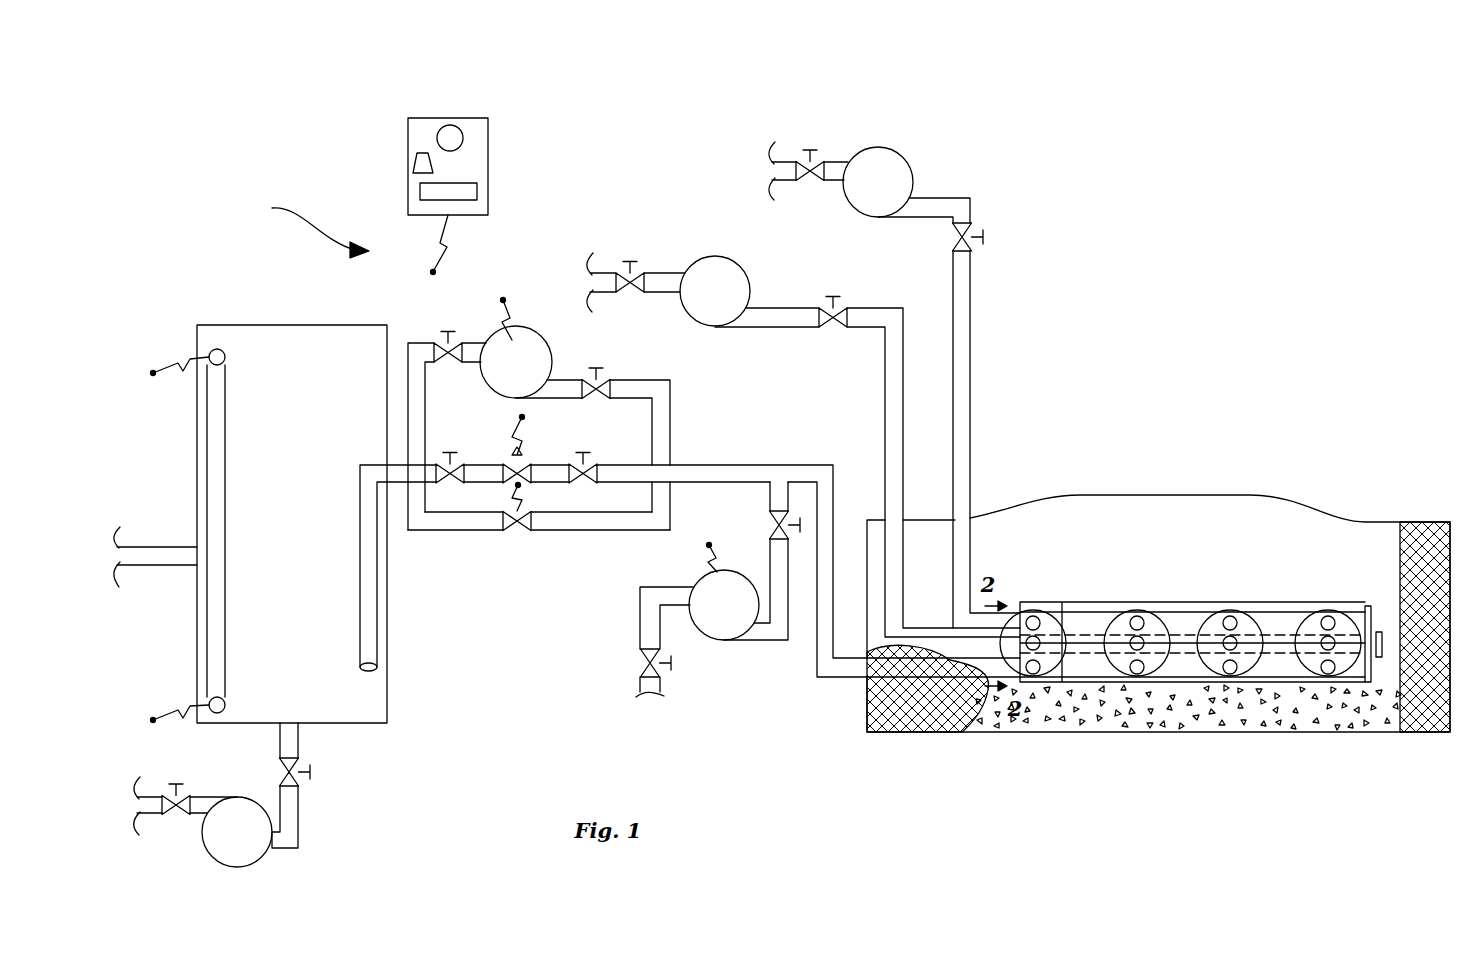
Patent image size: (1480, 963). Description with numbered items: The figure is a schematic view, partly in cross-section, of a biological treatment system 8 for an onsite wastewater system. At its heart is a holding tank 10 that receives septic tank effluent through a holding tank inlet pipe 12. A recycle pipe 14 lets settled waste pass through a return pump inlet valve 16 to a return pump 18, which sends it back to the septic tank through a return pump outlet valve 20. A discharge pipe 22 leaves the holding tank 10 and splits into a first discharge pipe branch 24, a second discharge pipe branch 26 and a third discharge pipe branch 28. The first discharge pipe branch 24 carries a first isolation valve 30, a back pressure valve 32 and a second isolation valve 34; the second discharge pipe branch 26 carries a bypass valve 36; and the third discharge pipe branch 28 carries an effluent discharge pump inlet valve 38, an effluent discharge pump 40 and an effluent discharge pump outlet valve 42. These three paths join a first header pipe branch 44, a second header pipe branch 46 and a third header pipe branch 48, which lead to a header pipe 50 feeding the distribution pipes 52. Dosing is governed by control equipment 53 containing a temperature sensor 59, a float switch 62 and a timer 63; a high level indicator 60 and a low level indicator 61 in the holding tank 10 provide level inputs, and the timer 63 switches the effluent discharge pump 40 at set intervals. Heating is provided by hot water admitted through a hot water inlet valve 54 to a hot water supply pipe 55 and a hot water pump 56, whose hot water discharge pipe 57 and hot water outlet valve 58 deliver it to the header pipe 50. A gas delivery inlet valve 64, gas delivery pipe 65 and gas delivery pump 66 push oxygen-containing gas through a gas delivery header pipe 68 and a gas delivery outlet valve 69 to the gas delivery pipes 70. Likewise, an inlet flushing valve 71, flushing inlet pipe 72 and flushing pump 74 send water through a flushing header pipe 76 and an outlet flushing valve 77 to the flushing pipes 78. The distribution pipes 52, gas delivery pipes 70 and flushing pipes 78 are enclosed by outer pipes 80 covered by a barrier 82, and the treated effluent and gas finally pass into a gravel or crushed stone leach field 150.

The biological treatment system 8 is at (307, 227).
The holding tank 10 is at (383, 697).
The holding tank inlet pipe 12 is at (175, 557).
The recycle pipe 14 is at (298, 750).
The return pump inlet valve 16 is at (312, 772).
The return pump 18 is at (238, 845).
The return pump outlet valve 20 is at (178, 815).
The discharge pipe 22 is at (398, 490).
The first discharge pipe branch 24 is at (433, 462).
The second discharge pipe branch 26 is at (465, 522).
The third discharge pipe branch 28 is at (405, 378).
The first isolation valve 30 is at (447, 452).
The back pressure valve 32 is at (522, 448).
The second isolation valve 34 is at (586, 453).
The bypass valve 36 is at (513, 520).
The effluent discharge pump inlet valve 38 is at (437, 340).
The effluent discharge pump 40 is at (505, 327).
The effluent discharge pump outlet valve 42 is at (596, 370).
The first header pipe branch 44 is at (607, 475).
The second header pipe branch 46 is at (623, 527).
The third header pipe branch 48 is at (662, 417).
The header pipe 50 is at (708, 468).
The distribution pipes 52 is at (1052, 690).
The control equipment 53 is at (488, 150).
The hot water inlet valve 54 is at (640, 656).
The hot water supply pipe 55 is at (640, 622).
The hot water pump 56 is at (725, 628).
The hot water discharge pipe 57 is at (778, 632).
The hot water outlet valve 58 is at (800, 522).
The temperature sensor 59 is at (412, 163).
The high level indicator 60 is at (210, 352).
The low level indicator 61 is at (210, 702).
The float switch 62 is at (478, 193).
The timer 63 is at (418, 138).
The gas delivery inlet valve 64 is at (806, 158).
The gas delivery pipe 65 is at (840, 172).
The gas delivery pump 66 is at (887, 160).
The gas delivery header pipe 68 is at (935, 203).
The gas delivery outlet valve 69 is at (982, 237).
The gas delivery pipes 70 is at (1055, 612).
The inlet flushing valve 71 is at (632, 262).
The flushing inlet pipe 72 is at (678, 284).
The flushing pump 74 is at (723, 270).
The flushing header pipe 76 is at (803, 318).
The outlet flushing valve 77 is at (838, 300).
The flushing pipes 78 is at (1322, 645).
The outer pipes 80 is at (968, 700).
The barrier 82 is at (1330, 607).
The leach field 150 is at (1350, 715).